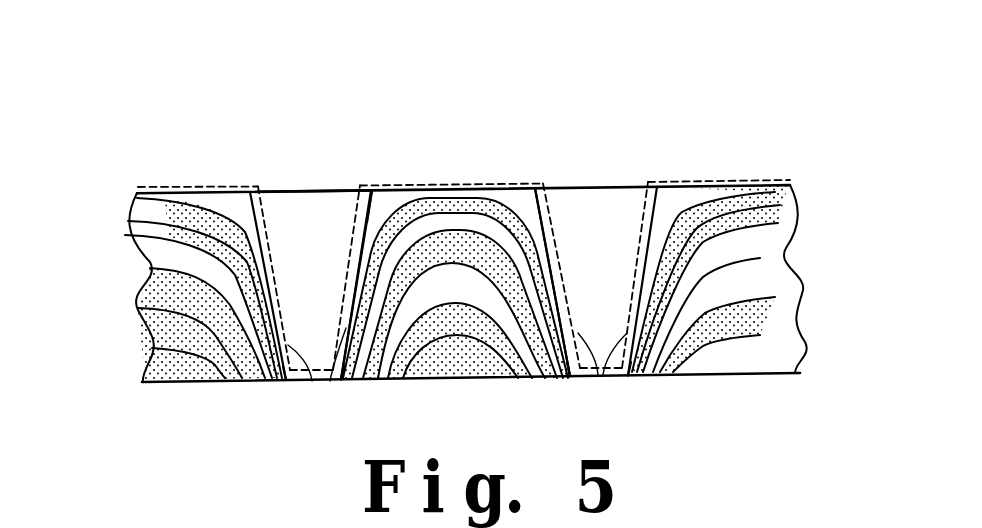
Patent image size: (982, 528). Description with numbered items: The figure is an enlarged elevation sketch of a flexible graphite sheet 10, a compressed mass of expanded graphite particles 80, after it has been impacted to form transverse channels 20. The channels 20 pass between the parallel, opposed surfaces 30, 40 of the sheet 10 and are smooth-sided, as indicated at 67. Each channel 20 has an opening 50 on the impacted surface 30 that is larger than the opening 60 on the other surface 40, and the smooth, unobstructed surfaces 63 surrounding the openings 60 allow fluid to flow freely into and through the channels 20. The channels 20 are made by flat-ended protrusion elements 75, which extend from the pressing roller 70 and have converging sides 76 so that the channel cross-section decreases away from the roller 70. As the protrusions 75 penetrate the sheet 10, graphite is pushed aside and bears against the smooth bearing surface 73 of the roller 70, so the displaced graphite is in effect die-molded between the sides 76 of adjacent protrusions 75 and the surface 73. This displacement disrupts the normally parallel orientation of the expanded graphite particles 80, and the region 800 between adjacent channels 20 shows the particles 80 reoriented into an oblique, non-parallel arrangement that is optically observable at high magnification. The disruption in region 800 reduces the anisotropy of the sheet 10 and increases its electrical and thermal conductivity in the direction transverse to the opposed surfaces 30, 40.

The flexible graphite sheet 10 is at (178, 136).
The channels 20 is at (319, 178).
The opposed surface 30 is at (442, 190).
The opposed surface 40 is at (473, 378).
The openings 50 is at (350, 188).
The openings 60 is at (293, 382).
The smooth, unobstructed surfaces 63 is at (279, 382).
The smooth sides 67 is at (350, 303).
The pressing roller 70 is at (268, 177).
The smooth bearing surface 73 is at (210, 186).
The protrusion elements 75 is at (303, 253).
The sides 76 is at (330, 381).
The expanded graphite particles 80 is at (130, 221).
The region of disrupted orientation 800 is at (520, 189).